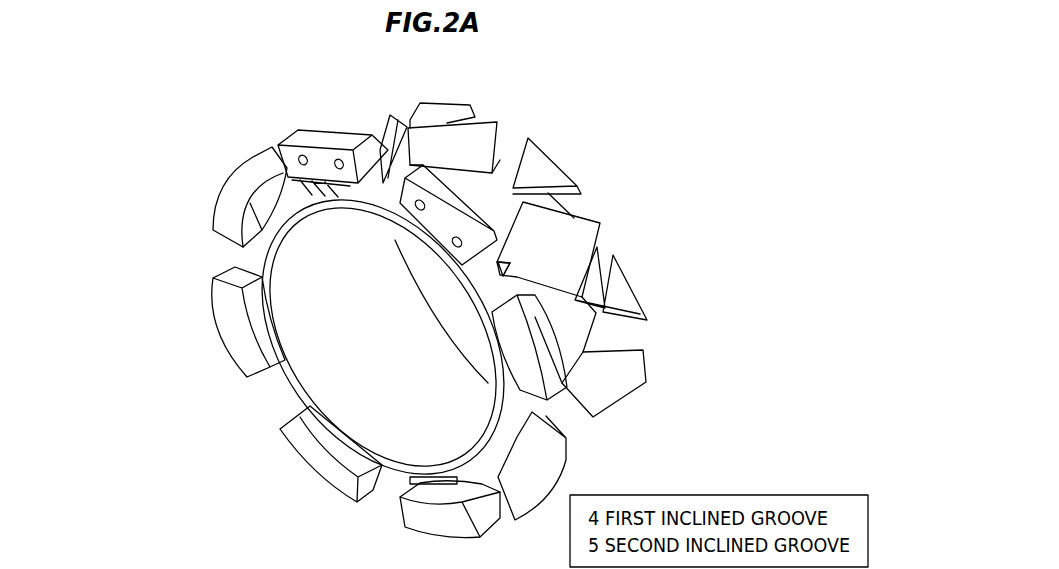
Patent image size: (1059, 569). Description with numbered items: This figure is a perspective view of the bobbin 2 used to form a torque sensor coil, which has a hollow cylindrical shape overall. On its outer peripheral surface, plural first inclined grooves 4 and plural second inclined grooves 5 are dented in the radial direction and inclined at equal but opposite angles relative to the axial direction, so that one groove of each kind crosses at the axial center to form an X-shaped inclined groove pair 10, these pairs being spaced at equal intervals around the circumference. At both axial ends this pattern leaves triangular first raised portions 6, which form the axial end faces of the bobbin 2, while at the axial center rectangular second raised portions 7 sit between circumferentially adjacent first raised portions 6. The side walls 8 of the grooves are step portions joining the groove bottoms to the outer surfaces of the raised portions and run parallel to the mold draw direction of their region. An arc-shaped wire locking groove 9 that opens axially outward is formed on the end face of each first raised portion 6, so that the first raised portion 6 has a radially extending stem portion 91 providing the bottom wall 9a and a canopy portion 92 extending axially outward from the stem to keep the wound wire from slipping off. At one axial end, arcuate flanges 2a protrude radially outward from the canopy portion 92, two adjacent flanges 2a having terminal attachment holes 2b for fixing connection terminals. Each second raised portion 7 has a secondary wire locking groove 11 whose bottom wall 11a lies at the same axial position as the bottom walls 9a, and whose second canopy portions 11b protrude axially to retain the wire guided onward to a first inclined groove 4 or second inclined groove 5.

The bobbin 2 is at (450, 295).
The flange 2a is at (320, 139).
The terminal attachment hole 2b is at (340, 157).
The first inclined groove 4 is at (478, 185).
The second inclined groove 5 is at (502, 152).
The first raised portion 6 is at (503, 232).
The second raised portion 7 is at (618, 367).
The side wall 8 is at (578, 345).
The wire locking groove 9 is at (482, 117).
The bottom wall 9a is at (293, 205).
The inclined groove pair 10 is at (620, 133).
The secondary wire locking groove 11 is at (470, 292).
The bottom wall 11a is at (495, 278).
The second canopy portion 11b is at (498, 280).
The stem portion 91 is at (545, 197).
The canopy portion 92 is at (566, 174).